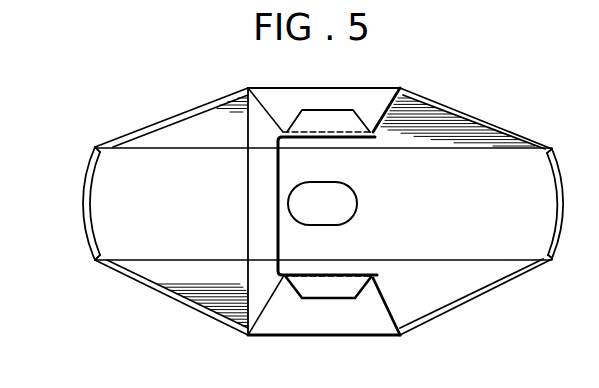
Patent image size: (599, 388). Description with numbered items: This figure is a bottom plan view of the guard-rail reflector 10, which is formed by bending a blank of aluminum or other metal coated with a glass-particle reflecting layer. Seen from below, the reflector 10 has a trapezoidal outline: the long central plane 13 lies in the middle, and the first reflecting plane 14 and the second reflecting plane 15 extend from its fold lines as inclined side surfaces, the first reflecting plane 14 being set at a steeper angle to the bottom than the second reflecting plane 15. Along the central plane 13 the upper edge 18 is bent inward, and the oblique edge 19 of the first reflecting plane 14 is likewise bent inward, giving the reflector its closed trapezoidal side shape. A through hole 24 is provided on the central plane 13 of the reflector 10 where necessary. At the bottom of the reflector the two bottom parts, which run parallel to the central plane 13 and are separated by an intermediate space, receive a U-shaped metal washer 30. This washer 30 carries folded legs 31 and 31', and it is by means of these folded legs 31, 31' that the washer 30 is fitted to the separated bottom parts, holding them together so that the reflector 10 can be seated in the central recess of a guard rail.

The reflector 10 is at (491, 115).
The central plane 13 is at (434, 220).
The first reflecting plane 14 is at (424, 300).
The second reflecting plane 15 is at (421, 137).
The upper edge of the central plane 18 is at (89, 208).
The oblique edge of the first reflecting plane 19 is at (167, 297).
The through hole 24 is at (334, 219).
The U-shaped metal washer 30 is at (257, 215).
The folded leg 31 is at (324, 93).
The folded leg 31' is at (324, 324).